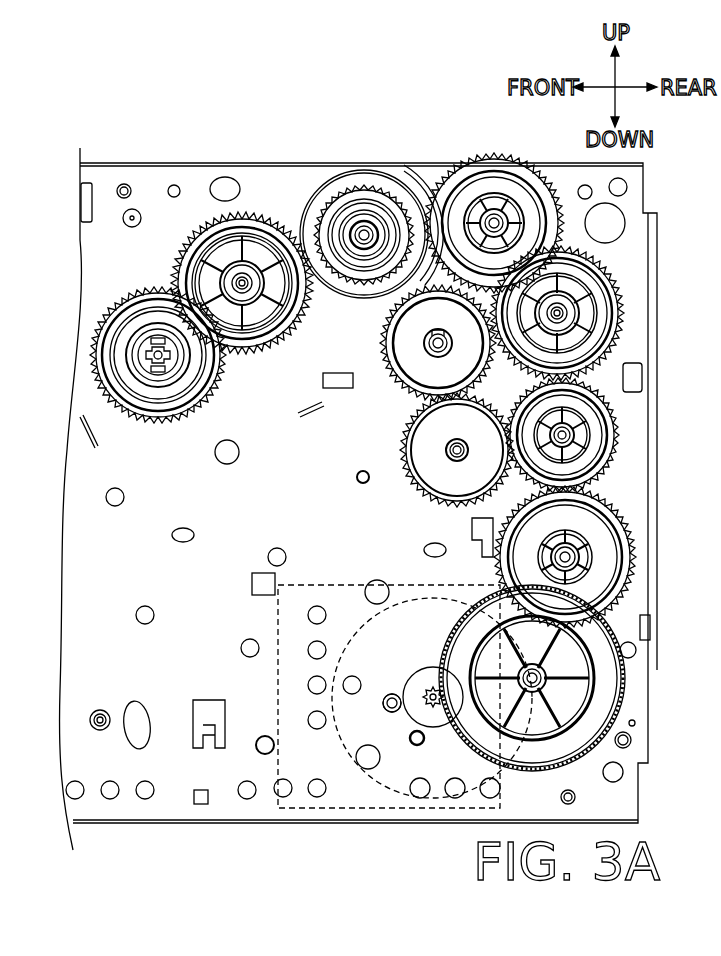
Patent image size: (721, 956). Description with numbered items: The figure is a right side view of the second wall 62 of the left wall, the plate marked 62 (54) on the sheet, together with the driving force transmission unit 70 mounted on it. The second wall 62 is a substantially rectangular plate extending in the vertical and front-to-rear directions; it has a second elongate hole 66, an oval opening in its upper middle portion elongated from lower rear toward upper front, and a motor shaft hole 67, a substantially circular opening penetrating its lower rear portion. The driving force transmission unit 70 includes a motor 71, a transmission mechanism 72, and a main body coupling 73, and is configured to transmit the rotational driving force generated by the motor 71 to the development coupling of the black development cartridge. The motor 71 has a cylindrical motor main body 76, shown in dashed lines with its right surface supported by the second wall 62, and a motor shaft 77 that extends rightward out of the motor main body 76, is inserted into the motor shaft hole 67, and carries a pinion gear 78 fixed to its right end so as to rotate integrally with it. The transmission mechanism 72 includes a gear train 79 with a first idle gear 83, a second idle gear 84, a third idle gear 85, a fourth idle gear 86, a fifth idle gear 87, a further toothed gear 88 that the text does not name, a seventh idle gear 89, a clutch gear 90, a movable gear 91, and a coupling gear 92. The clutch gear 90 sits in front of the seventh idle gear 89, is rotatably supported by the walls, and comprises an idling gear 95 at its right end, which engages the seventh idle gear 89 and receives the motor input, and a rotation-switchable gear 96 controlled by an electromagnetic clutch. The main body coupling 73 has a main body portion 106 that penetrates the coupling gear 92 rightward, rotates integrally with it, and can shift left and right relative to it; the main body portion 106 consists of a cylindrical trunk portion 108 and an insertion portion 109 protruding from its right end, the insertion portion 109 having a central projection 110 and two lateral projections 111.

The second wall 62 is at (160, 158).
The side frame 54 is at (358, 463).
The movable gear 91 is at (230, 228).
The rotation-switchable gear 96 is at (305, 195).
The idling gear 95 is at (330, 200).
The clutch gear 90 is at (352, 178).
The transmission mechanism 72 is at (407, 166).
The driving force transmission unit 70 is at (424, 170).
The seventh idle gear 89 is at (494, 152).
The gear train 79 is at (600, 313).
The gear 88 is at (628, 320).
The third idle gear 85 is at (620, 448).
The second idle gear 84 is at (632, 550).
The first idle gear 83 is at (625, 668).
The coupling gear 92 is at (150, 354).
The main body coupling 73 is at (130, 334).
The main body portion 106 is at (120, 363).
The trunk portion 108 is at (143, 367).
The central projection 110 is at (160, 340).
The lateral projections 111 is at (140, 372).
The insertion portion 109 is at (277, 368).
The second elongate hole 66 is at (235, 278).
The fifth idle gear 87 is at (380, 343).
The fourth idle gear 86 is at (400, 450).
The motor shaft hole 67 is at (405, 708).
The motor main body 76 is at (360, 770).
The motor shaft 77 is at (413, 707).
The pinion gear 78 is at (438, 707).
The motor 71 is at (416, 747).